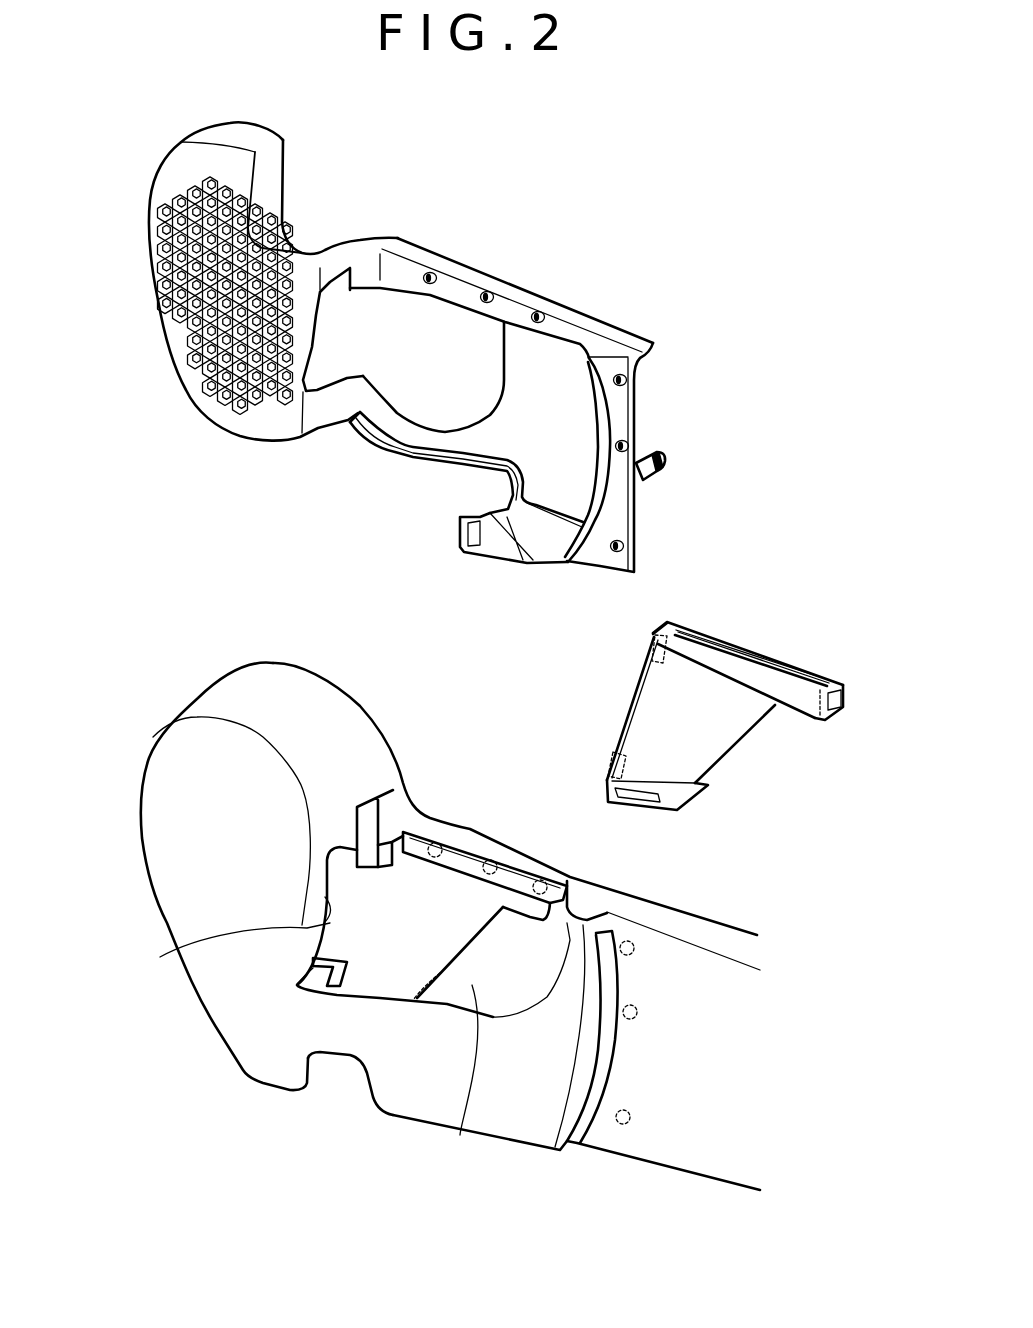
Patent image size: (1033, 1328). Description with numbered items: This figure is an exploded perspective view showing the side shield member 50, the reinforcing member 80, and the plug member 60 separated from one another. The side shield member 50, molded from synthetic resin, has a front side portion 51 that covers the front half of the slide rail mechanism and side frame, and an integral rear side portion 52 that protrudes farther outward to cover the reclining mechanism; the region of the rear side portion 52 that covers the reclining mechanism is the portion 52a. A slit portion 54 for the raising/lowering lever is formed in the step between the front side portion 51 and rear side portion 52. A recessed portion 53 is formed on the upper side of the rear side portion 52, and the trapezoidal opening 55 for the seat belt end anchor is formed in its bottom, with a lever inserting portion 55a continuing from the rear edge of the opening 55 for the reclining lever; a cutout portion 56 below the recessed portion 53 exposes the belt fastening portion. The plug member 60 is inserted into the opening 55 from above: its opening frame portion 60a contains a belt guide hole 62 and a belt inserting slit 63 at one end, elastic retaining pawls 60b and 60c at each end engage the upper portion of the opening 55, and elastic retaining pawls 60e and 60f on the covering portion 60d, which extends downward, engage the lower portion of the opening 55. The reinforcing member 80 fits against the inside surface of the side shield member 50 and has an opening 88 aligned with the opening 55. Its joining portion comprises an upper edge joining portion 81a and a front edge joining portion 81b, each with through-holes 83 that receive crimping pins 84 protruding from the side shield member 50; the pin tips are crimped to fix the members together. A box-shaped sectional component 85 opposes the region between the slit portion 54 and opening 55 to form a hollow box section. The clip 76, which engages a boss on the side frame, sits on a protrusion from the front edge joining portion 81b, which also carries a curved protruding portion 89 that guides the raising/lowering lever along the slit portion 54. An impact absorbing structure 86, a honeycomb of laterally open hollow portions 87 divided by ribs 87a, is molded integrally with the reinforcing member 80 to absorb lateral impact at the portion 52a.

The side shield member 50 is at (147, 886).
The front side portion 51 is at (692, 1157).
The rear side portion 52 is at (232, 985).
The portion covering the reclining mechanism 52a is at (185, 812).
The recessed portion 53 is at (460, 1135).
The slit portion 54 is at (583, 1115).
The opening 55 is at (444, 908).
The lever inserting portion 55a is at (165, 956).
The cutout portion 56 is at (313, 1073).
The plug member 60 is at (775, 646).
The opening frame portion 60a is at (803, 662).
The elastic retaining pawl 60b is at (833, 713).
The elastic retaining pawl 60c is at (650, 650).
The covering portion 60d is at (720, 727).
The elastic retaining pawl 60e is at (710, 787).
The elastic retaining pawl 60f is at (603, 770).
The belt guide hole 62 is at (737, 648).
The belt inserting slit 63 is at (667, 628).
The clip 76 is at (673, 460).
The reinforcing member 80 is at (424, 232).
The upper edge joining portion 81a is at (510, 297).
The front edge joining portion 81b is at (620, 505).
The through-holes 83 is at (434, 273).
The crimping pins 84 is at (436, 843).
The box-shaped sectional component 85 is at (533, 436).
The impact absorbing structure 86 is at (190, 365).
The hollow portions 87 is at (215, 416).
The ribs 87a is at (266, 416).
The opening 88 is at (439, 352).
The protruding portion 89 is at (592, 557).